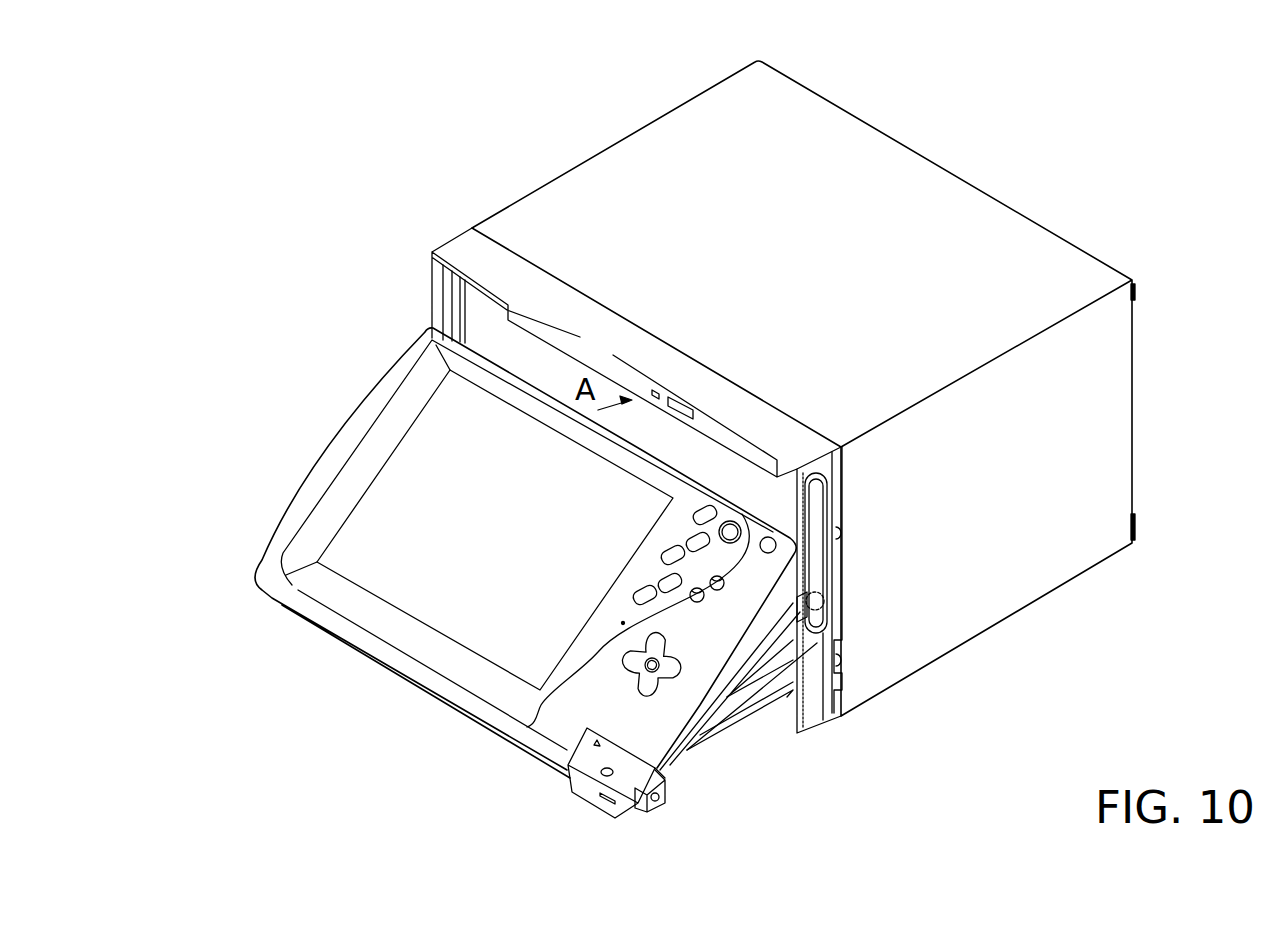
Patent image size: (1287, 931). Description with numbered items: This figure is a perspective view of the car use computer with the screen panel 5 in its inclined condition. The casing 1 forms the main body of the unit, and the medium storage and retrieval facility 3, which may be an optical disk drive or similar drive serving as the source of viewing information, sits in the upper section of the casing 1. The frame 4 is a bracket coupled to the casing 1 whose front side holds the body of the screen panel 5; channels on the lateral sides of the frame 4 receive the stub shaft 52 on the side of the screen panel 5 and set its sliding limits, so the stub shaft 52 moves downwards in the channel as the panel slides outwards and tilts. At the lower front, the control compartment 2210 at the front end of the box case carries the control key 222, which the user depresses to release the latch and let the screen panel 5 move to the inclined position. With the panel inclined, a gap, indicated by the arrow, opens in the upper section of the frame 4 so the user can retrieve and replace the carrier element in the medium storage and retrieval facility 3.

The casing 1 is at (990, 607).
The medium storage and retrieval facility 3 is at (525, 318).
The frame 4 is at (472, 247).
The screen panel 5 is at (323, 435).
The stub shaft 52 is at (826, 602).
The control compartment 2210 is at (580, 795).
The control key 222 is at (641, 810).